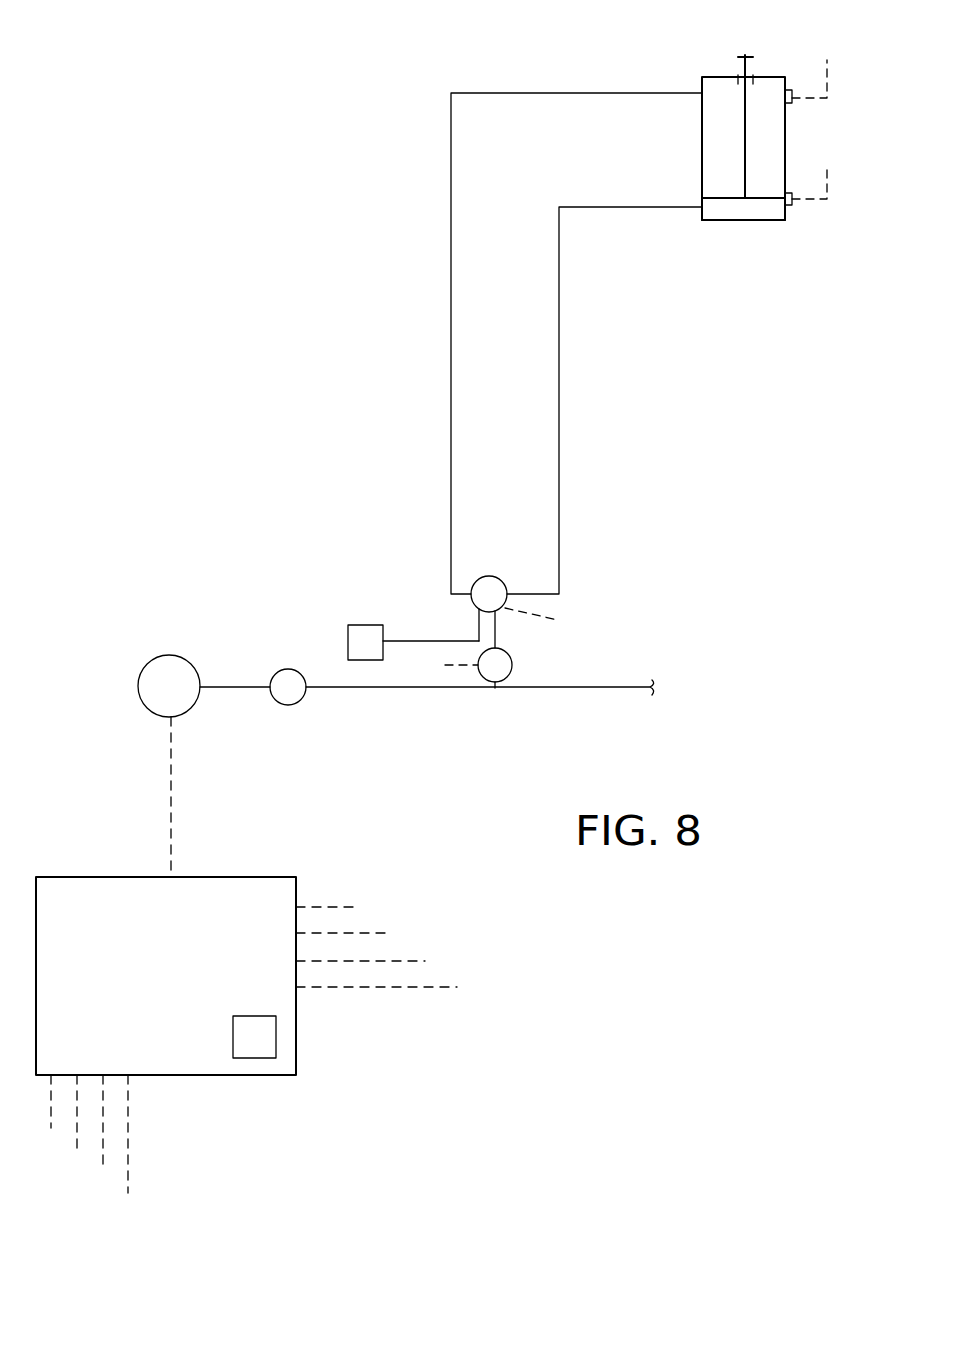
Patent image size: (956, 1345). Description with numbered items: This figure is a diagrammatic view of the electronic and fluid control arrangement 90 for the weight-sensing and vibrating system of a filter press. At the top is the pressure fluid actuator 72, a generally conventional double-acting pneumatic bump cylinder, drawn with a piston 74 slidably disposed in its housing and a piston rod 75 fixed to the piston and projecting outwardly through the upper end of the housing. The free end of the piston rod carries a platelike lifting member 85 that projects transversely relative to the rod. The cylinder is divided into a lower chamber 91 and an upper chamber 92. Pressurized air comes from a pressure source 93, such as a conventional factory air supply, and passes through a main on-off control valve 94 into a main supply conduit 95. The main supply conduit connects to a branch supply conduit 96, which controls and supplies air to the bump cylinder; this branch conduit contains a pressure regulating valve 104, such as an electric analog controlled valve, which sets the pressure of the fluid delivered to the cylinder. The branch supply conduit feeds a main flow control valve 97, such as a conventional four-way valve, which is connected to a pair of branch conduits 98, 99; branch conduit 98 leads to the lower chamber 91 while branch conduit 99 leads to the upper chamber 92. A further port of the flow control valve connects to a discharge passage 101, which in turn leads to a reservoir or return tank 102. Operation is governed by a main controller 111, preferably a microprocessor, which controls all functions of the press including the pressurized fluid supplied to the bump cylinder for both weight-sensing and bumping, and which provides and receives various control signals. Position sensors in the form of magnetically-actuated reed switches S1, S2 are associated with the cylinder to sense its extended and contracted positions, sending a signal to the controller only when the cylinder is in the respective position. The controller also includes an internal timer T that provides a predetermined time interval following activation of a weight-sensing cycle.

The pressure fluid actuator 72 is at (696, 128).
The piston 74 is at (727, 205).
The piston rod 75 is at (740, 107).
The lifting member 85 is at (745, 57).
The electronic and fluid control arrangement 90 is at (727, 569).
The lower chamber 91 is at (753, 222).
The upper chamber 92 is at (717, 160).
The pressure source 93 is at (183, 672).
The main on-off control valve 94 is at (290, 678).
The main supply conduit 95 is at (400, 690).
The branch supply conduit 96 is at (497, 631).
The main flow control valve 97 is at (487, 580).
The branch conduit 98 is at (559, 522).
The branch conduit 99 is at (451, 447).
The discharge passage 101 is at (413, 641).
The return tank 102 is at (357, 625).
The pressure regulating valve 104 is at (512, 665).
The main controller 111 is at (105, 875).
The reed switch S1 is at (792, 100).
The reed switch S2 is at (792, 205).
The internal timer T is at (260, 1050).